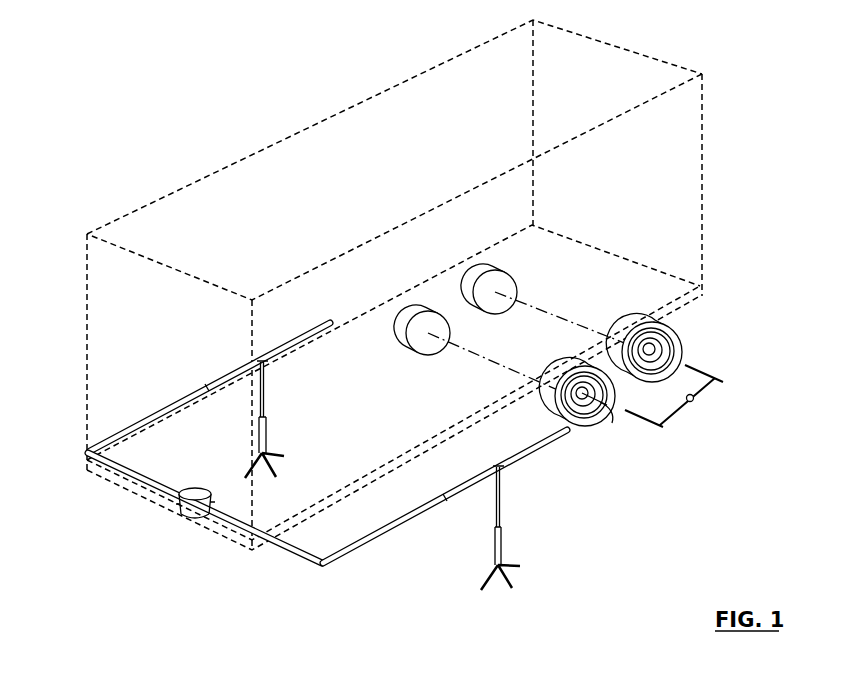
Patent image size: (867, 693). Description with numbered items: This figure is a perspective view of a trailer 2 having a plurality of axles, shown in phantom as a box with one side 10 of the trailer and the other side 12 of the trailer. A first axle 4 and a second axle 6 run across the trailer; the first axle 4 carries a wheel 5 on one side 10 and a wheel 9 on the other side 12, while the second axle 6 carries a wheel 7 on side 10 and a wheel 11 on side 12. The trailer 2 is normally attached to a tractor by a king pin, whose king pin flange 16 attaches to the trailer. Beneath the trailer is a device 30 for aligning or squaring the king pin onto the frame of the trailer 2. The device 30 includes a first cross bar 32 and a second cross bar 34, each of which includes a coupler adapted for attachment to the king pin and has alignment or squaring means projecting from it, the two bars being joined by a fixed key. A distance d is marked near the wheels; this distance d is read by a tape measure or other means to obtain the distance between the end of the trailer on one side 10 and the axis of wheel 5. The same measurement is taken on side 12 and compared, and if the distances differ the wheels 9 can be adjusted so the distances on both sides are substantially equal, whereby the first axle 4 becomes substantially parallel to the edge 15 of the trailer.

The trailer 2 is at (430, 309).
The first axle 4 is at (500, 360).
The wheel 5 is at (548, 370).
The second axle 6 is at (565, 318).
The wheel 7 is at (680, 338).
The wheel 9 is at (395, 305).
The side of trailer 10 is at (700, 228).
The wheel 11 is at (478, 262).
The other side of trailer 12 is at (388, 92).
The edge 15 is at (293, 459).
The king pin flange 16 is at (170, 490).
The device for alignment with a king pin 30 is at (232, 540).
The first cross bar 32 is at (106, 492).
The second cross bar 34 is at (305, 545).
The distance d is at (652, 403).